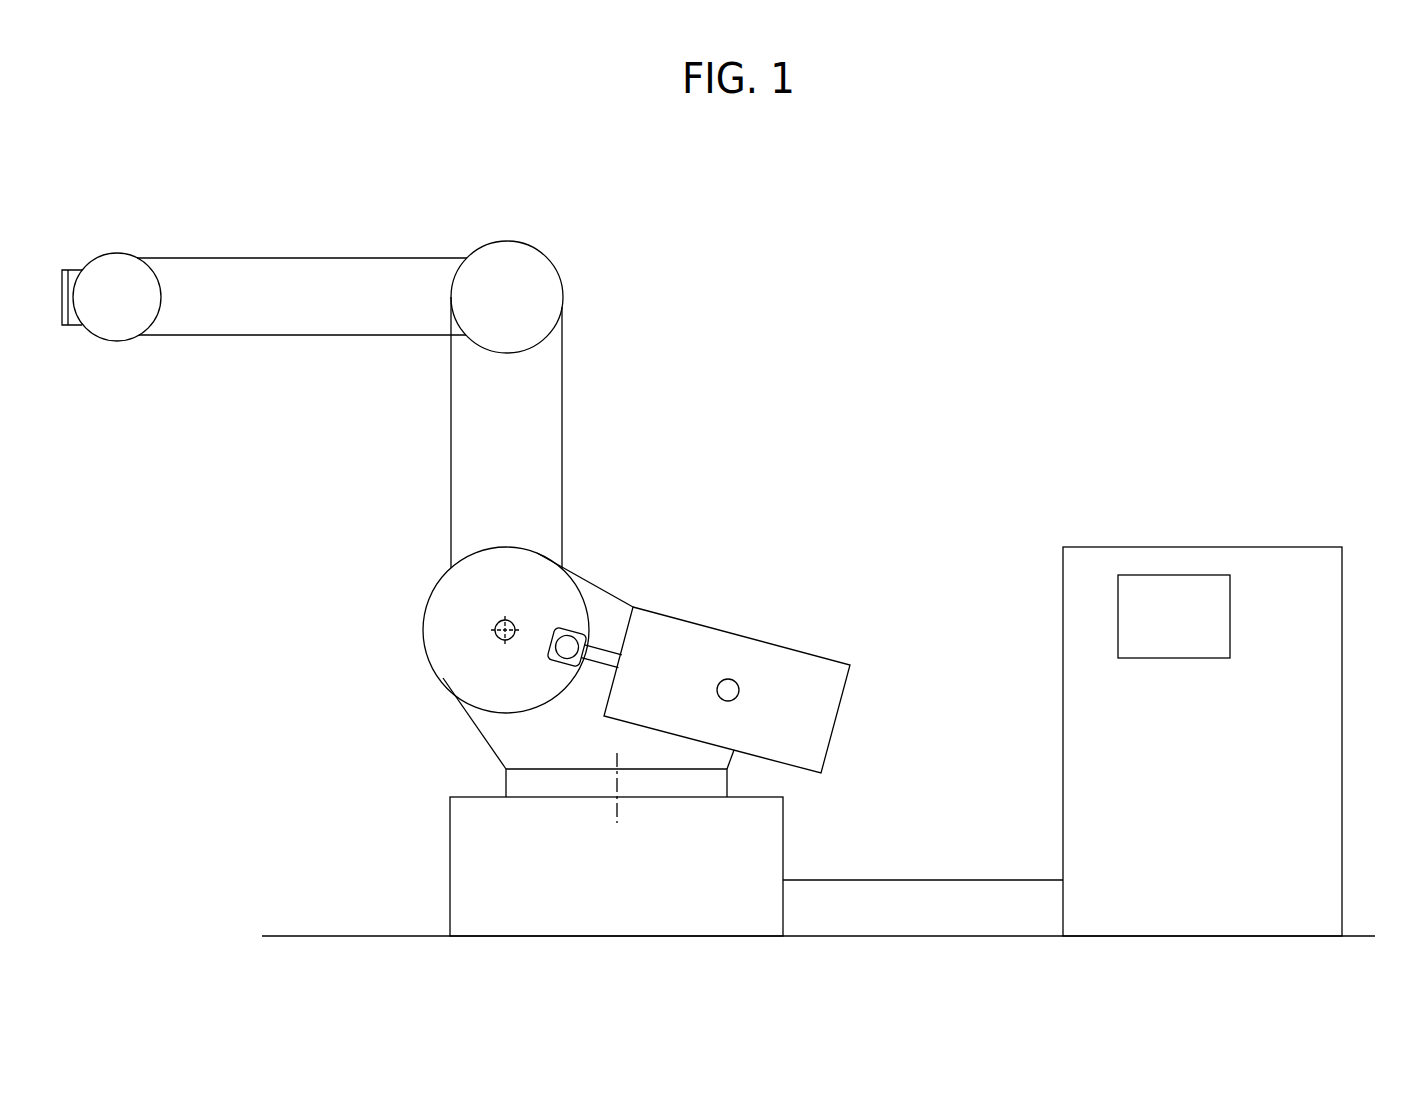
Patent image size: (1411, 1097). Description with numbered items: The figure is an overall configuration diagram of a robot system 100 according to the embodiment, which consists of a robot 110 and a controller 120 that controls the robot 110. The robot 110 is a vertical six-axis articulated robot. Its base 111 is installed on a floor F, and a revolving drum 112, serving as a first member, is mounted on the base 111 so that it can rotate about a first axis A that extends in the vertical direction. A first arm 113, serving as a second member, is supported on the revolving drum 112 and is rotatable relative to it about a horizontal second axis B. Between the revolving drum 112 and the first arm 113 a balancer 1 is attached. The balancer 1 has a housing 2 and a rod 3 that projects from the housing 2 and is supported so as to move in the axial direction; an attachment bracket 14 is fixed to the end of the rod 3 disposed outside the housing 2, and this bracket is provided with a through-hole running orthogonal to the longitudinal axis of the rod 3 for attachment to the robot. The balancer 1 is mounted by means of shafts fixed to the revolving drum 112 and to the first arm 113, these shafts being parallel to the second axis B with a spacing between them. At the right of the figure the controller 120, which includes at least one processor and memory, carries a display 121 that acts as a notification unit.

The robot system 100 is at (914, 164).
The robot 110 is at (699, 251).
The base 111 is at (450, 824).
The revolving drum 112 is at (470, 722).
The first arm 113 is at (450, 467).
The attachment bracket 14 is at (570, 630).
The rod 3 is at (607, 648).
The housing 2 is at (733, 616).
The balancer 1 is at (813, 618).
The controller 120 is at (1178, 527).
The display 121 is at (1118, 613).
The first axis A is at (617, 808).
The second axis B is at (498, 630).
The floor F is at (278, 935).